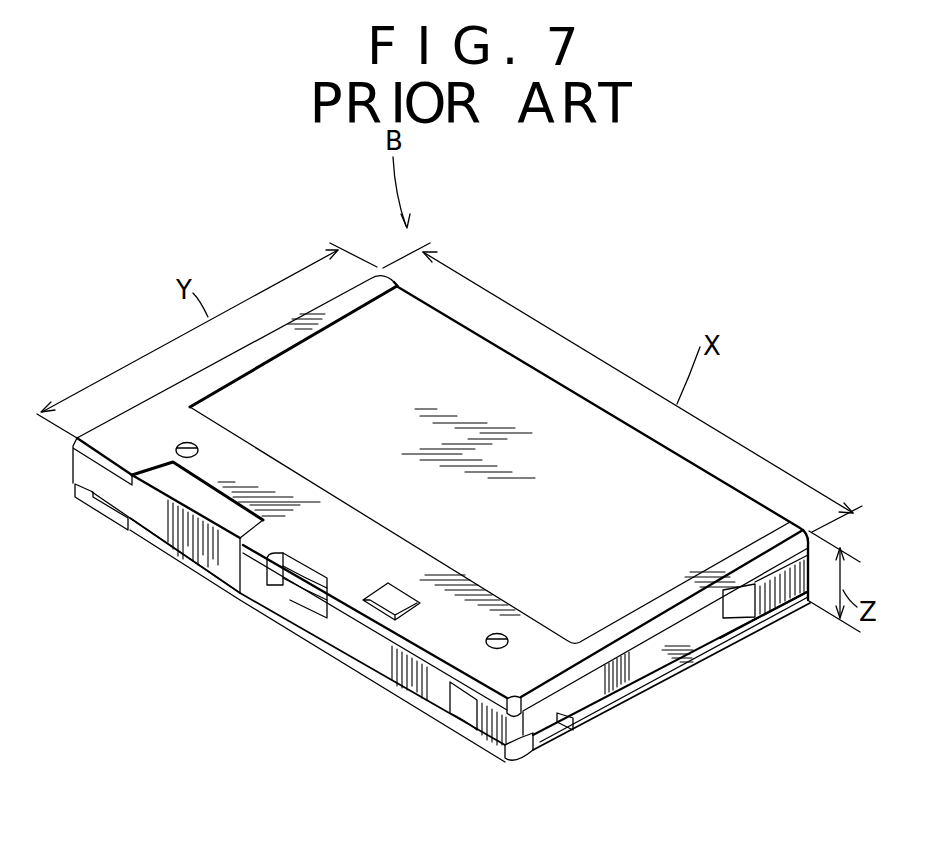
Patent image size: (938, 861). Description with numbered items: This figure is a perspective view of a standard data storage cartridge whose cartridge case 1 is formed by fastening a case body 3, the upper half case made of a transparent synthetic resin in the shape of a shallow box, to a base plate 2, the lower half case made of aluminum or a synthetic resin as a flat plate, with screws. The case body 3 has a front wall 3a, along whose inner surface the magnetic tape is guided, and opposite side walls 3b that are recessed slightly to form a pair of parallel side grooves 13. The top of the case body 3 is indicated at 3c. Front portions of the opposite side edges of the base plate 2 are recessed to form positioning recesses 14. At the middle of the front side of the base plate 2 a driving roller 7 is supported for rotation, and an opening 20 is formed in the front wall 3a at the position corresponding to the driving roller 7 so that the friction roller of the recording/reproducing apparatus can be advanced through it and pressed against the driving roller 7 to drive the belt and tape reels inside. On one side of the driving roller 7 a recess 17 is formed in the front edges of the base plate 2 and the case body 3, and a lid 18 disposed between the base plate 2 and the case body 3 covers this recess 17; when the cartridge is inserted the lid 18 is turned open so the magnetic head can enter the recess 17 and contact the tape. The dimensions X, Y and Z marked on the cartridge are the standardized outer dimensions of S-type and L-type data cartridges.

The cartridge case 1 is at (518, 289).
The base plate 2 is at (368, 672).
The case body 3 is at (517, 384).
The front wall 3a is at (420, 688).
The side walls 3b is at (794, 596).
The top plate of upper shell 3c is at (583, 412).
The driving roller 7 is at (295, 576).
The side grooves 13 is at (645, 657).
The positioning recesses 14 is at (570, 725).
The recess 17 is at (220, 487).
The lid 18 is at (183, 553).
The opening 20 is at (306, 606).